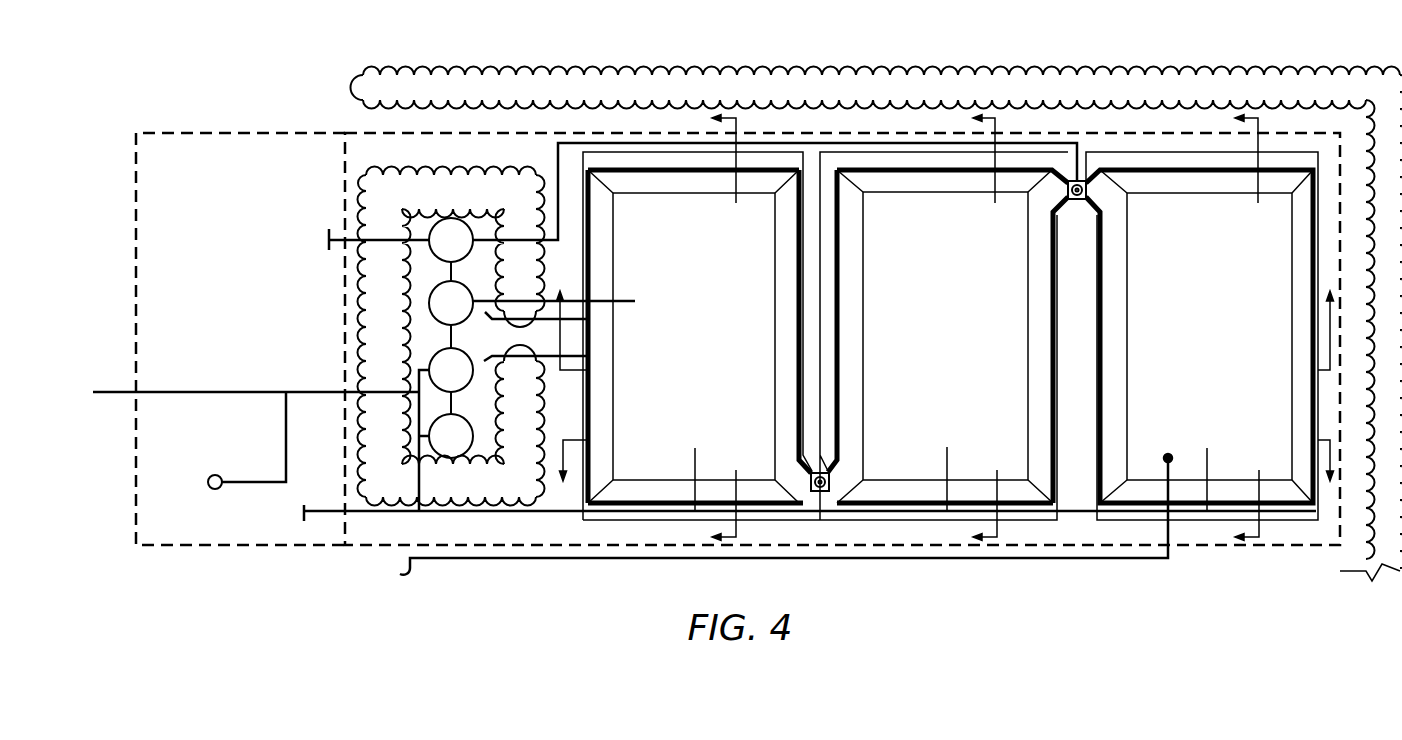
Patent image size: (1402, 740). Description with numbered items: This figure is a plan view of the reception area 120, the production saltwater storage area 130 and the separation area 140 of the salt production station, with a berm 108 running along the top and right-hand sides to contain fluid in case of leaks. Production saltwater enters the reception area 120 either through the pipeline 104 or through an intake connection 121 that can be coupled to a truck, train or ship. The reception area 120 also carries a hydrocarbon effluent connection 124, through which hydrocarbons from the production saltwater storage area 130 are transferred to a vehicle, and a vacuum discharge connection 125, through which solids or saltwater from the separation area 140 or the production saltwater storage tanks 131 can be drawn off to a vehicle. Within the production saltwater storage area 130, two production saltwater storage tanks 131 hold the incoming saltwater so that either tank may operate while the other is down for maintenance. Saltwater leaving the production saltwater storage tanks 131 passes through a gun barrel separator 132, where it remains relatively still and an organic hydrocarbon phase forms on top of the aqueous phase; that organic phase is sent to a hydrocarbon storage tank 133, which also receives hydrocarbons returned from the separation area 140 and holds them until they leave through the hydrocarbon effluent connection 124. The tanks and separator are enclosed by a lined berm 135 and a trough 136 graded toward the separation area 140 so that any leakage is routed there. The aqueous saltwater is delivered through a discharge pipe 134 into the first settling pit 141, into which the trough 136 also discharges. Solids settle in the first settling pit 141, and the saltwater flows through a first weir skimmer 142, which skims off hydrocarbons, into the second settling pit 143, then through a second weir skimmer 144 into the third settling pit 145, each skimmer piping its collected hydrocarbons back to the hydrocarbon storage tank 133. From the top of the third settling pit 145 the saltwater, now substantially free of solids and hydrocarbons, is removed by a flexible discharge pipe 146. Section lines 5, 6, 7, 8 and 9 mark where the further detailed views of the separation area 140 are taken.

The pipeline 104 is at (122, 393).
The berm 108 is at (820, 88).
The reception area 120 is at (136, 345).
The intake connection 121 is at (221, 492).
The hydrocarbon effluent connection 124 is at (328, 243).
The vacuum discharge connection 125 is at (300, 516).
The production saltwater storage area 130 is at (453, 131).
The production saltwater storage tank 131 is at (446, 429).
The gun barrel separator 132 is at (451, 314).
The hydrocarbon storage tank 133 is at (451, 249).
The discharge pipe 134 is at (616, 301).
The berm 135 is at (405, 192).
The trough 136 is at (572, 335).
The separation area 140 is at (1137, 131).
The first settling pit 141 is at (697, 336).
The first weir skimmer 142 is at (811, 475).
The second settling pit 143 is at (939, 336).
The second weir skimmer 144 is at (1067, 191).
The third settling pit 145 is at (1202, 336).
The discharge pipe 146 is at (1168, 458).
The section line for FIG. 5 is at (714, 331).
The section line for FIG. 6 is at (972, 331).
The section line for FIG. 7 is at (1233, 331).
The section line for FIG. 8 is at (944, 319).
The section line for FIG. 9 is at (946, 475).